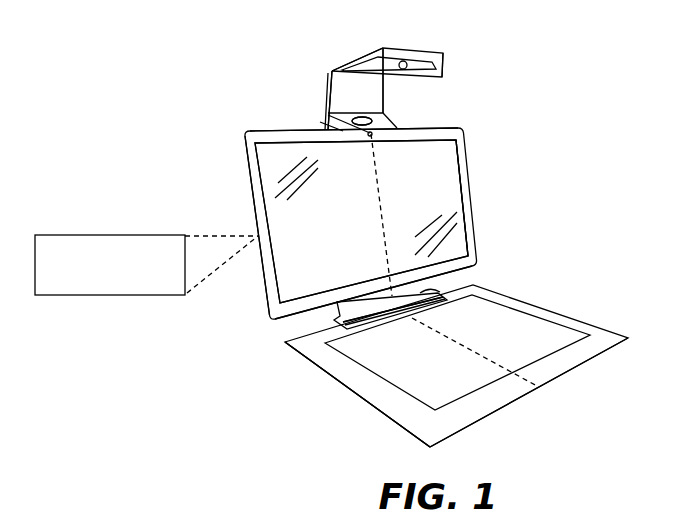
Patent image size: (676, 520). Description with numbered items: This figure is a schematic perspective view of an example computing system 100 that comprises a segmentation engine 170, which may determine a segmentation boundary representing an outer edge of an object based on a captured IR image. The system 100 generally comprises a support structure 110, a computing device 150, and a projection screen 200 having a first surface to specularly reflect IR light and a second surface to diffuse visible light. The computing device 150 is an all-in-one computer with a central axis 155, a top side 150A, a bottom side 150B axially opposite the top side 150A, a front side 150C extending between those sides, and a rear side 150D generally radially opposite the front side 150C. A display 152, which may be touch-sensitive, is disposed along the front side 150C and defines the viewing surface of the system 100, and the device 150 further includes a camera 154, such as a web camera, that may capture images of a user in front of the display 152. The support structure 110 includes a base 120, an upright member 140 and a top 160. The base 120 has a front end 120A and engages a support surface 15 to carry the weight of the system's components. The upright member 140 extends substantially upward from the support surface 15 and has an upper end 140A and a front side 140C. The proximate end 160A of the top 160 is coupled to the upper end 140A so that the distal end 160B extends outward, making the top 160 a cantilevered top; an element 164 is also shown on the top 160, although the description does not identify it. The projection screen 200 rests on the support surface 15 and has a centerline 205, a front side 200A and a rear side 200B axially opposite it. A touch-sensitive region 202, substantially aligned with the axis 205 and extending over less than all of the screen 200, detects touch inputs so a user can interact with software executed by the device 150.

The computing system 100 is at (549, 90).
The support structure 110 is at (239, 110).
The base 120 is at (331, 318).
The front end 120A is at (390, 326).
The upright member 140 is at (324, 102).
The upper end 140A is at (329, 69).
The front side 140C is at (377, 88).
The computing device 150 is at (478, 183).
The top side 150A is at (436, 128).
The bottom side 150B is at (458, 273).
The front side 150C is at (462, 220).
The rear side 150D is at (242, 196).
The display 152 is at (309, 205).
The camera 154 is at (325, 121).
The central axis 155 is at (384, 208).
The top 160 is at (391, 35).
The proximate end 160A is at (329, 69).
The distal end 160B is at (444, 51).
The fold-mirror / sensor bundle 164 is at (437, 67).
The segmentation engine 170 is at (110, 296).
The projection screen 200 is at (590, 328).
The front side 200A is at (470, 423).
The rear side 200B is at (288, 340).
The touch-sensitive region 202 is at (530, 347).
The central axis 205 is at (455, 340).
The support surface 15 is at (337, 447).